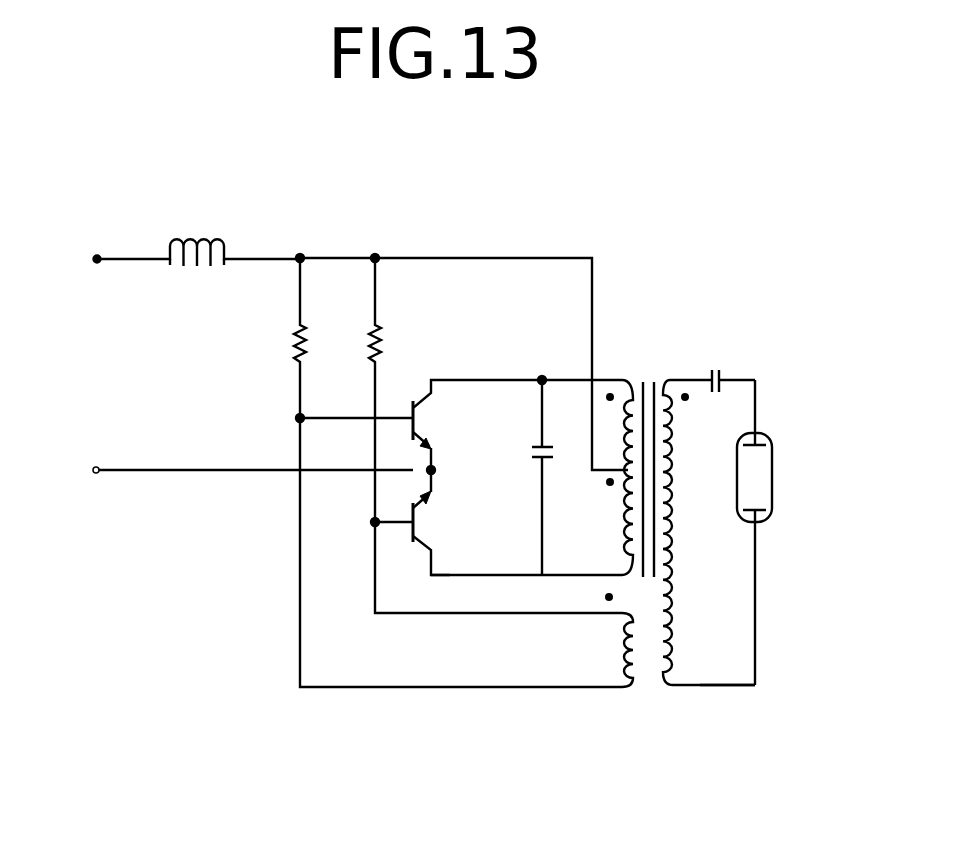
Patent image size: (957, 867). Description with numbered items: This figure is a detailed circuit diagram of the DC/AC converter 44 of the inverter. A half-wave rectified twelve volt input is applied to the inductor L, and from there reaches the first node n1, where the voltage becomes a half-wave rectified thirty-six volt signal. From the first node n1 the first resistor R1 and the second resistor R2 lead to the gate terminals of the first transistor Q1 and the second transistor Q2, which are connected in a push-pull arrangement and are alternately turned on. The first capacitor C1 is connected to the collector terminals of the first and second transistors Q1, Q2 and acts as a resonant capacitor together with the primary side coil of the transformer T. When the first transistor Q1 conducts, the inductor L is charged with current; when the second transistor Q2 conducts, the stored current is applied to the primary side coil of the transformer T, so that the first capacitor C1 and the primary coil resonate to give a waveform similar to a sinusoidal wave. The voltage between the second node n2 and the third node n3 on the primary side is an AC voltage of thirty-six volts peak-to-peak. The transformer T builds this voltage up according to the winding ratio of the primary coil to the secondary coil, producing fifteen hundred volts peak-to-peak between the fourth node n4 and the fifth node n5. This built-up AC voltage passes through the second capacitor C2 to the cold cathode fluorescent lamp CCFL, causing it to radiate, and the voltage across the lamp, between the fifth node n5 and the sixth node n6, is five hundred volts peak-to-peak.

The DC/AC converter 44 is at (440, 458).
The first node n1 is at (302, 256).
The second node n2 is at (433, 571).
The third node n3 is at (603, 379).
The fourth node n4 is at (677, 379).
The fifth node n5 is at (722, 687).
The sixth node n6 is at (755, 404).
The inductor L is at (200, 238).
The first resistor R1 is at (434, 472).
The second resistor R2 is at (472, 435).
The first transistor Q1 is at (517, 427).
The second transistor Q2 is at (517, 522).
The first capacitor C1 is at (526, 475).
The second capacitor C2 is at (729, 366).
The transformer T is at (679, 496).
The cold cathode fluorescent lamp CCFL is at (792, 559).